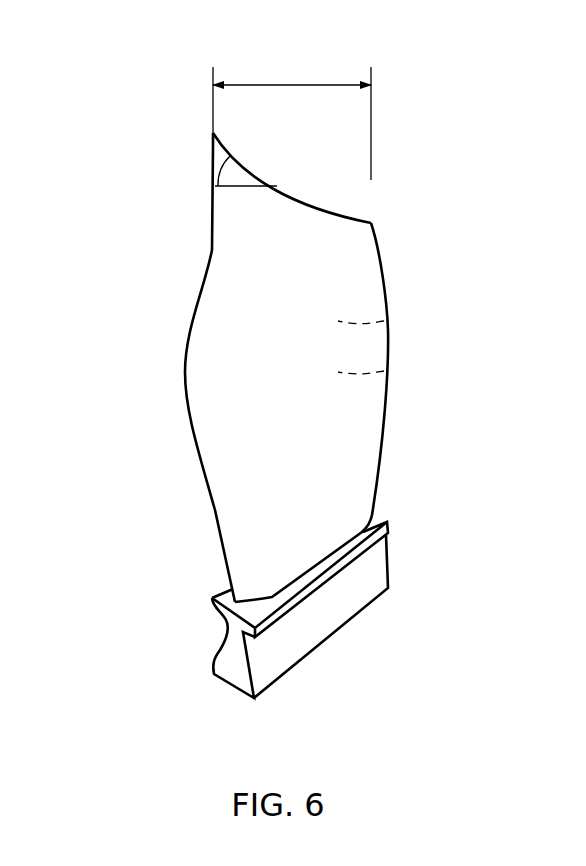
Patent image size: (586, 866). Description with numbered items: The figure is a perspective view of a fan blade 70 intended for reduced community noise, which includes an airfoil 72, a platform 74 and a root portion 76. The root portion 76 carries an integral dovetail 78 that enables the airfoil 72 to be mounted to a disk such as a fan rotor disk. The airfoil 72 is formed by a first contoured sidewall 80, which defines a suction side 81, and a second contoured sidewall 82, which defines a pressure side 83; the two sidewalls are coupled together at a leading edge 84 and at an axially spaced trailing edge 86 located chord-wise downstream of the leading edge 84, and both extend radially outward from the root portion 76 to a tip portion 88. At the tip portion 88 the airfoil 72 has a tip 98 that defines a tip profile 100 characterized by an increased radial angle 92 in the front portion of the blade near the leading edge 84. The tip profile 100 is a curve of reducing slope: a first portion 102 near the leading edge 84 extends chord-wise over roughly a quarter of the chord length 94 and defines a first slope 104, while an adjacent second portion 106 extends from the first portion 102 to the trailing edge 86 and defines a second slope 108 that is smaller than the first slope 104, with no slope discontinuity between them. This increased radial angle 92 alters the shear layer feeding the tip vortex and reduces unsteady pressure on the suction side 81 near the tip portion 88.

The fan blade 70 is at (133, 160).
The airfoil 72 is at (350, 222).
The platform 74 is at (240, 628).
The root portion 76 is at (400, 553).
The dovetail 78 is at (362, 598).
The first contoured sidewall 80 is at (362, 417).
The suction side 81 is at (362, 450).
The second contoured sidewall 82 is at (384, 371).
The pressure side 83 is at (384, 321).
The leading edge 84 is at (187, 347).
The trailing edge 86 is at (384, 266).
The tip portion 88 is at (198, 132).
The increased radial angle 92 is at (248, 187).
The chord length 94 is at (335, 85).
The tip 98 is at (215, 133).
The tip profile 100 is at (205, 153).
The first portion 102 is at (240, 150).
The first slope 104 is at (240, 185).
The second portion 106 is at (336, 207).
The second slope 108 is at (330, 212).